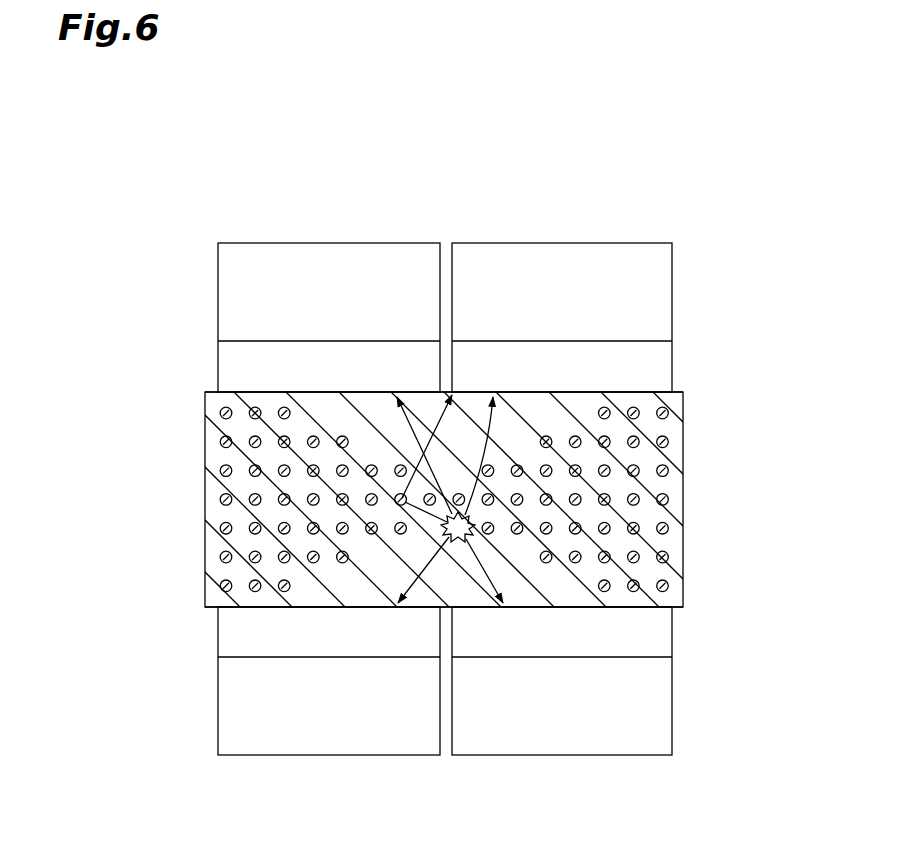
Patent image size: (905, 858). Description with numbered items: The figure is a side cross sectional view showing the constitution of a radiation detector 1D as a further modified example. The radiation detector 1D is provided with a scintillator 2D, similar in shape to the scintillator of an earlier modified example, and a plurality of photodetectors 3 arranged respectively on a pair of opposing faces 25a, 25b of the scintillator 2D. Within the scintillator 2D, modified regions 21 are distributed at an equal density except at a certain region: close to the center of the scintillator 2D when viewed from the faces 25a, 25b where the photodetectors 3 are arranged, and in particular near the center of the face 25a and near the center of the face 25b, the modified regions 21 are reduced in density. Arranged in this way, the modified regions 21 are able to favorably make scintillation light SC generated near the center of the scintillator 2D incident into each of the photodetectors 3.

The radiation detector 1D is at (622, 160).
The photodetectors 3 is at (427, 243).
The scintillator 2D is at (446, 506).
The face 25a is at (627, 392).
The face 25b is at (627, 607).
The modified regions 21 is at (221, 529).
The scintillation light SC is at (460, 542).